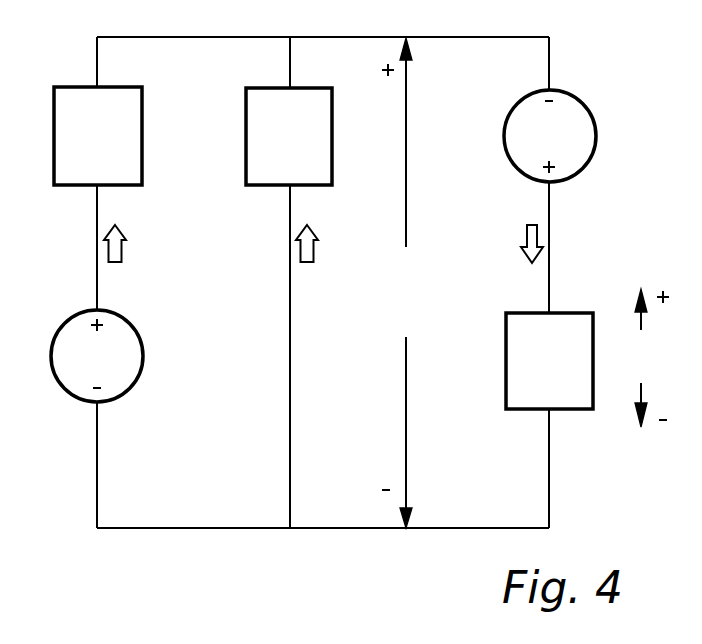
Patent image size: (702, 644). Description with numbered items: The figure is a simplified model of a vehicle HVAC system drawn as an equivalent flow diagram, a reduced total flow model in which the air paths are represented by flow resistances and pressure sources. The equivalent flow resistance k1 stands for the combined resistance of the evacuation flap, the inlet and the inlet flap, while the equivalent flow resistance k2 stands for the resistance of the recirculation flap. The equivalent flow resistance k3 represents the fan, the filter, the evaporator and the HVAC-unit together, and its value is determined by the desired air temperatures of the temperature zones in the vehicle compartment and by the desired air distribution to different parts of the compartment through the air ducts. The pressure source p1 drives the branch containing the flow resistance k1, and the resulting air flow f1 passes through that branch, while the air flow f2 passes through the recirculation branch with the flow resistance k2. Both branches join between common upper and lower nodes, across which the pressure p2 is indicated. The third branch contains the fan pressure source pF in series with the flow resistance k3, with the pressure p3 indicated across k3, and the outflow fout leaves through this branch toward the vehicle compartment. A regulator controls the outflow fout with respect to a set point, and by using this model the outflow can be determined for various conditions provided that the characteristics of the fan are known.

The equivalent flow resistance of the evacuation flap, inlet and inlet flap k1 is at (98, 136).
The equivalent flow resistance of the recirculation flap k2 is at (289, 136).
The equivalent flow resistance of the fan, filter, evaporator and HVAC-unit k3 is at (549, 361).
The pressure source p1 is at (97, 356).
The fan pressure source pF is at (550, 136).
The node pressure p2 is at (401, 283).
The pressure across flow resistance k3 p3 is at (648, 358).
The air flow through flow resistance k1 f1 is at (129, 248).
The air flow through flow resistance k2 f2 is at (321, 248).
The outflow fout is at (509, 238).